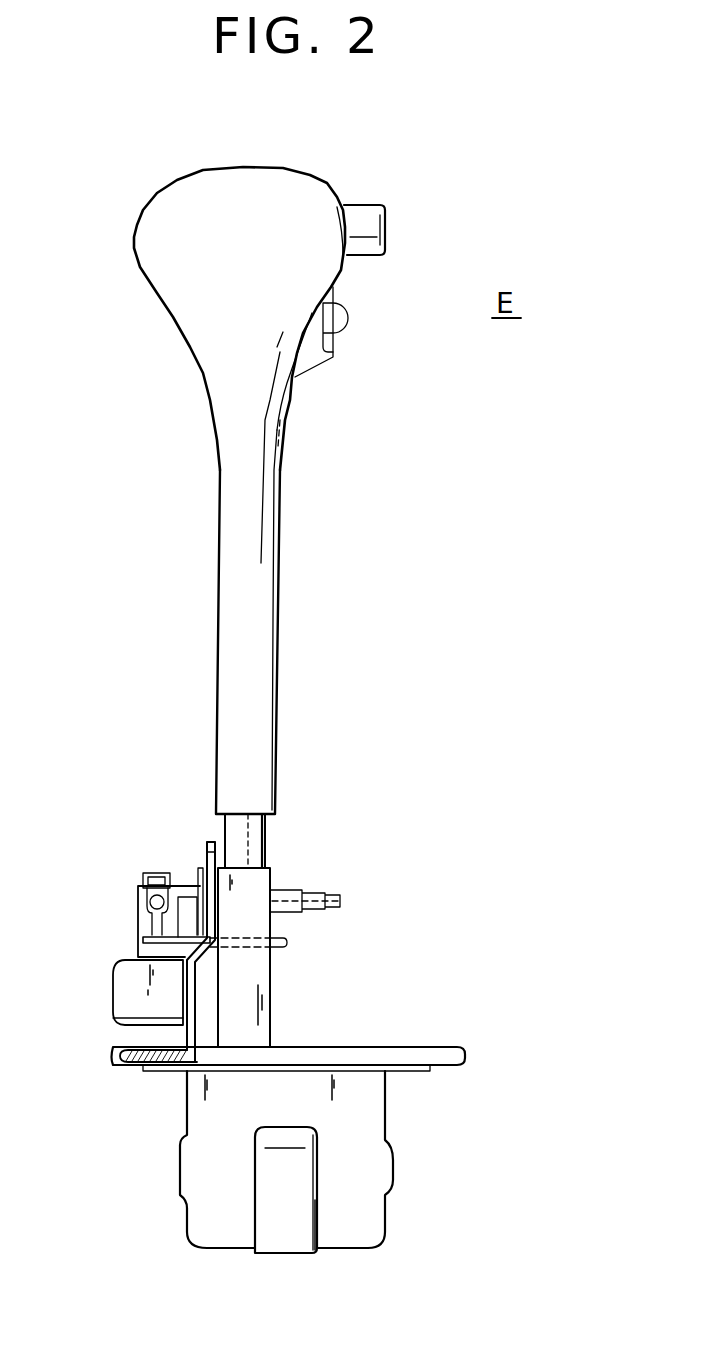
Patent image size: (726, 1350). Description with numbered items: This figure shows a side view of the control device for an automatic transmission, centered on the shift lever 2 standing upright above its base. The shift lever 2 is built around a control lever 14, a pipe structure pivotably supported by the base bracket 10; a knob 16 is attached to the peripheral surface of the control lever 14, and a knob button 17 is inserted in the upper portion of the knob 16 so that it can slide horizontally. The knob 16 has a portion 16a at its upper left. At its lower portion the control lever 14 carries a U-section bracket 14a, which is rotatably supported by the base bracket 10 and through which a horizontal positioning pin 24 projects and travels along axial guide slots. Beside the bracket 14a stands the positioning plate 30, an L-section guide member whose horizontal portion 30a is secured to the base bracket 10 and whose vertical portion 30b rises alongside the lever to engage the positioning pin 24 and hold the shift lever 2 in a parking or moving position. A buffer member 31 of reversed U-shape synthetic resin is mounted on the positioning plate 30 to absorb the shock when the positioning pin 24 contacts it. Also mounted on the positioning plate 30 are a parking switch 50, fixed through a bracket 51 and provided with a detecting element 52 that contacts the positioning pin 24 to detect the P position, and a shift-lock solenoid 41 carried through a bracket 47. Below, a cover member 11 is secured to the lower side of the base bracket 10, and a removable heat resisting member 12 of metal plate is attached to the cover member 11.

The shift lever 2 is at (261, 490).
The knob 16 is at (275, 613).
The knob 16a is at (143, 212).
The knob button 17 is at (389, 230).
The control lever 14 is at (270, 838).
The bracket 14a is at (270, 995).
The positioning plate 30 is at (151, 943).
The horizontal portion 30a is at (118, 1066).
The vertical portion 30b is at (205, 850).
The buffer member 31 is at (203, 911).
The parking switch 50 is at (140, 898).
The bracket 51 is at (183, 885).
The detecting element 52 is at (155, 925).
The positioning pin 24 is at (140, 944).
The bracket 47 is at (125, 993).
The shift-lock solenoid 41 is at (130, 1017).
The base bracket 10 is at (412, 1047).
The cover member 11 is at (383, 1122).
The heat resisting member 12 is at (312, 1250).